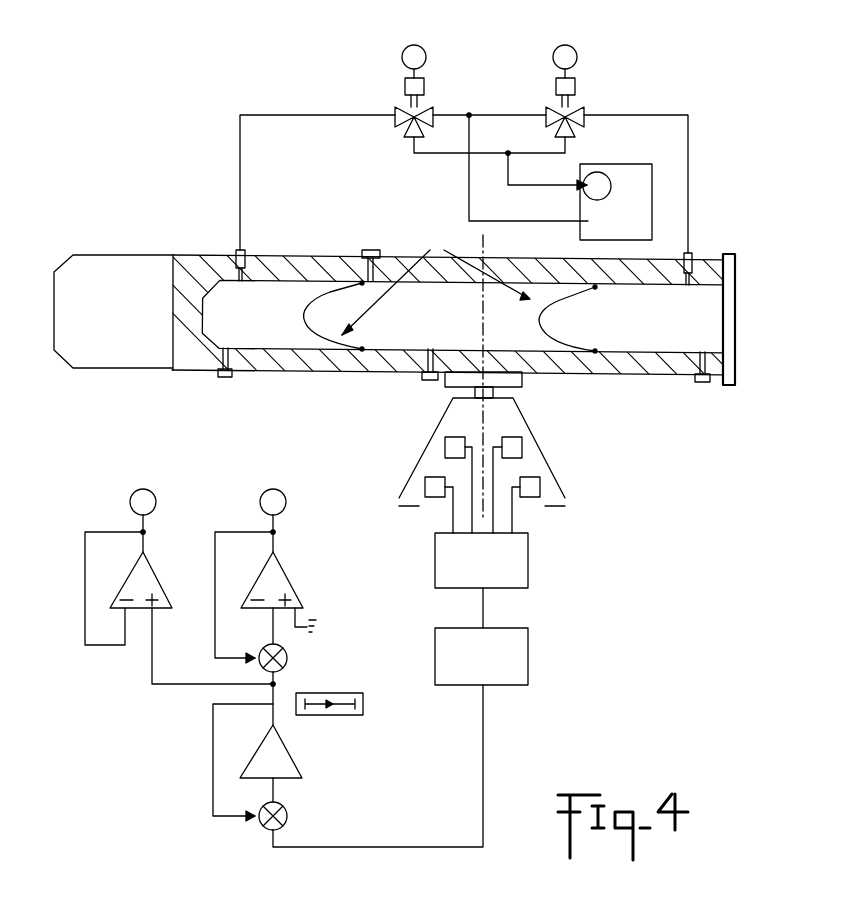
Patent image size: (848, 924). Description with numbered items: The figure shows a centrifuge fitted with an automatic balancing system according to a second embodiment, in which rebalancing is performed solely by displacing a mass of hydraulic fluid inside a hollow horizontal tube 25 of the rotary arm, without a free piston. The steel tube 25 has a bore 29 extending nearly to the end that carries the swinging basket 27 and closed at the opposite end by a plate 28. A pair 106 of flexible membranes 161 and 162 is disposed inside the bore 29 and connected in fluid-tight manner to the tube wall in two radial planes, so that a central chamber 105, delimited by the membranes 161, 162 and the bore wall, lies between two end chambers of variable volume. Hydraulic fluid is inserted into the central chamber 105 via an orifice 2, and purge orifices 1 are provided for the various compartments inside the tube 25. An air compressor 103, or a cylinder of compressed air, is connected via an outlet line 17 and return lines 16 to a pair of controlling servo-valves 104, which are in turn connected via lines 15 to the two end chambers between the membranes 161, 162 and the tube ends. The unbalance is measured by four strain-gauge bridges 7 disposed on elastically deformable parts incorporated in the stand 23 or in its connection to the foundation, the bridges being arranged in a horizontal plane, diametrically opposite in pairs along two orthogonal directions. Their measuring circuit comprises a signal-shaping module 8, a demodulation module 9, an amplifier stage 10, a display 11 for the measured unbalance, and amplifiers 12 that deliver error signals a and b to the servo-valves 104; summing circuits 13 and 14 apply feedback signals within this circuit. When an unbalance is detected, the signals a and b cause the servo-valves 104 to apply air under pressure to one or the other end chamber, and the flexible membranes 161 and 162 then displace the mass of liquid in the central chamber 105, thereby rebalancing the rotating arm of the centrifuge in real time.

The purge orifices 1 is at (229, 378).
The orifice 2 is at (371, 250).
The strain-gauge bridges 7 is at (450, 447).
The signal-shaping module 8 is at (530, 565).
The demodulation module 9 is at (520, 660).
The amplifier stage 10 is at (287, 768).
The display 11 is at (334, 716).
The amplifiers 12 is at (155, 582).
The summing circuit 13 is at (287, 818).
The summing circuit 14 is at (287, 661).
The lines 15 is at (238, 160).
The return lines 16 is at (527, 220).
The outlet line 17 is at (527, 185).
The stand 23 is at (566, 486).
The bored tube 25 is at (219, 253).
The swinging basket 27 is at (67, 369).
The plate 28 is at (735, 370).
The bore 29 is at (666, 287).
The air compressor 103 is at (645, 183).
The servo-valves 104 is at (421, 85).
The central chamber 105 is at (395, 340).
The pair of flexible membranes 106 is at (436, 282).
The flexible membrane 161 is at (311, 322).
The flexible membrane 162 is at (542, 329).